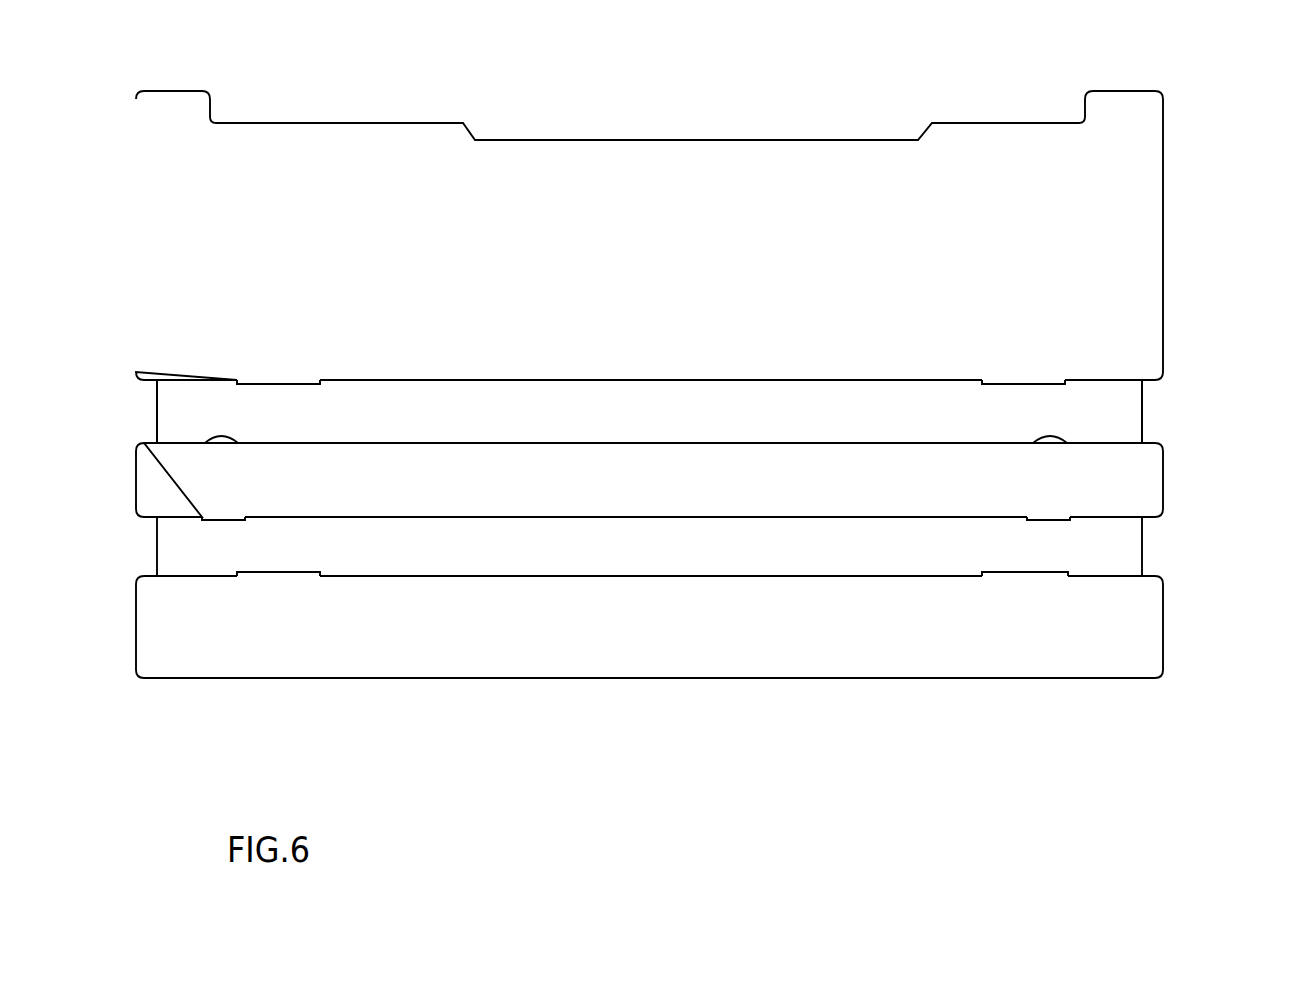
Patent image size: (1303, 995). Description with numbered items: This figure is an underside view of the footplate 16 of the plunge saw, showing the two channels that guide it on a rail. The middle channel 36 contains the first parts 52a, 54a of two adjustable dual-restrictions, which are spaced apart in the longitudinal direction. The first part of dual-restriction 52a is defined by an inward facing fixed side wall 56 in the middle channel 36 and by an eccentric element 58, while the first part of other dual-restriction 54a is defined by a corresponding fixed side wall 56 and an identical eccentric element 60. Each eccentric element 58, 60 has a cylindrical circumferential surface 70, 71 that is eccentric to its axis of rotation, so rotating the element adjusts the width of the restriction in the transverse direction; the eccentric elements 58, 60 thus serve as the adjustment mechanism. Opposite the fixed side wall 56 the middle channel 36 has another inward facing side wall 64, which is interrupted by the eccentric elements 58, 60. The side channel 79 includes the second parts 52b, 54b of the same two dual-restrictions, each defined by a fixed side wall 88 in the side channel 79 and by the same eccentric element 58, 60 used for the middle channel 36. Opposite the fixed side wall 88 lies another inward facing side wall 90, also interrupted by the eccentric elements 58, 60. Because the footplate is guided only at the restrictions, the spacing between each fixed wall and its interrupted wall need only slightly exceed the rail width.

The footplate 16 is at (465, 292).
The middle channel 36 is at (562, 410).
The first part of dual-restriction 52a is at (1040, 422).
The second part of dual-restriction 52b is at (1065, 550).
The first part of other dual-restriction 54a is at (212, 414).
The second part of other dual-restriction 54b is at (240, 540).
The fixed side wall 56 is at (302, 383).
The eccentric element 58 is at (1165, 419).
The cylindrical circumferential surface 70 is at (1068, 437).
The eccentric element 60 is at (135, 413).
The cylindrical circumferential surface 71 is at (200, 431).
The interrupted side wall 64 is at (930, 445).
The side channel 79 is at (562, 552).
The fixed side wall 88 is at (300, 576).
The interrupted side wall 90 is at (717, 517).